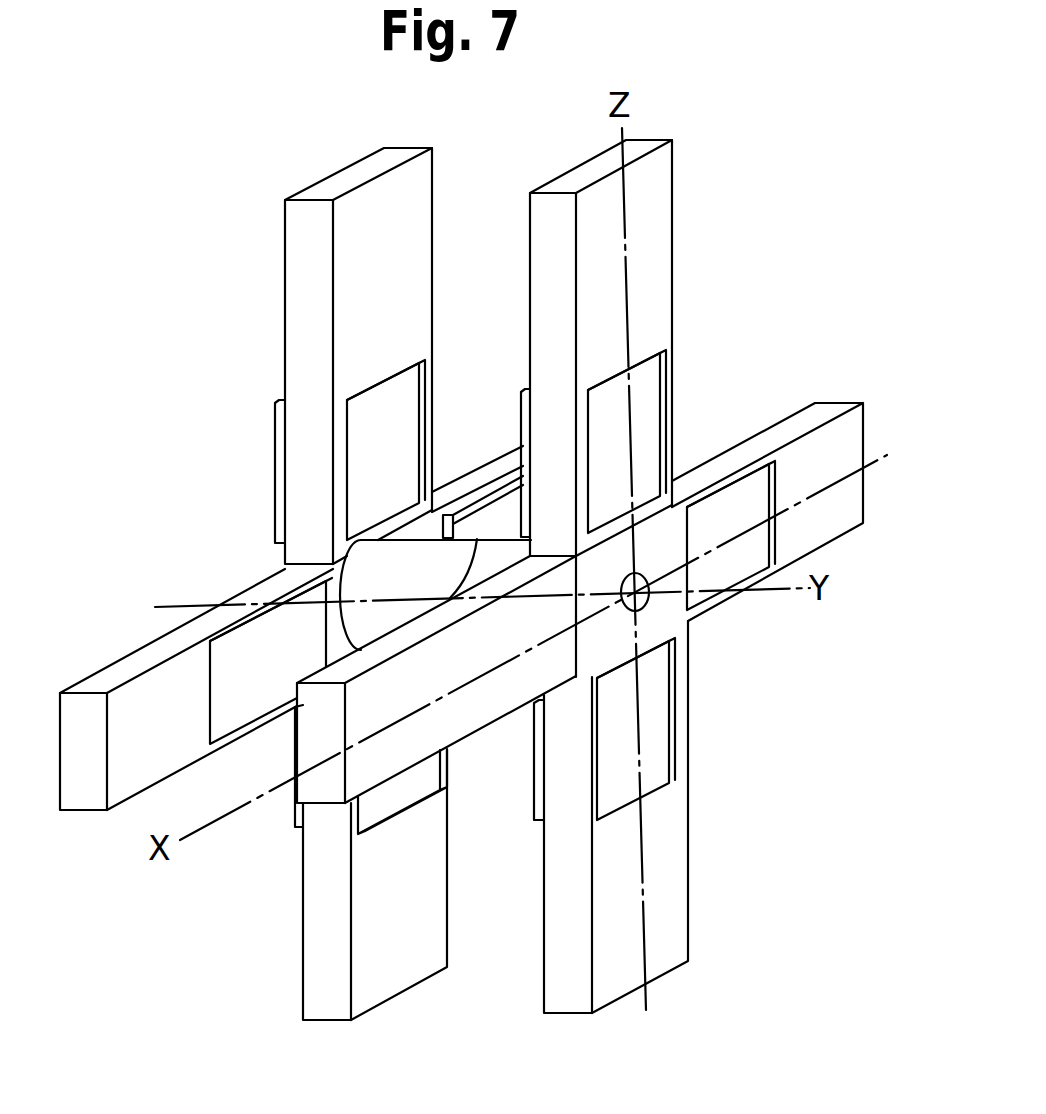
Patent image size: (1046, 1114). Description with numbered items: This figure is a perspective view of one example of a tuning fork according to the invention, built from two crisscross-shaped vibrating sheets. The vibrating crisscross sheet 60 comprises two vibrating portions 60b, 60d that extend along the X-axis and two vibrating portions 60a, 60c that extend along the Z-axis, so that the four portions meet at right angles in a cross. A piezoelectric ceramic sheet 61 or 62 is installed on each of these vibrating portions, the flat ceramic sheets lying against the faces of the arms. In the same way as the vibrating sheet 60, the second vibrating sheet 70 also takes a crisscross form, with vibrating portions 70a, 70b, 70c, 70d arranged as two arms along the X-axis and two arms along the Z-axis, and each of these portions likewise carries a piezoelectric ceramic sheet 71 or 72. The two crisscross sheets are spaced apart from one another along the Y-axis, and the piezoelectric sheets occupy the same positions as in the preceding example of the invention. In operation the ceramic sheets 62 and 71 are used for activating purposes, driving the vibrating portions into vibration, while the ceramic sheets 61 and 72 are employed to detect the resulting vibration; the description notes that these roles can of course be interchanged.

The vibrating crisscross sheet 60 is at (580, 576).
The vibrating portion 60a is at (688, 858).
The vibrating portion 60b is at (793, 460).
The vibrating portion 60c is at (653, 242).
The vibrating portion 60d is at (443, 738).
The piezoelectric ceramic sheet 61 is at (658, 744).
The piezoelectric ceramic sheet 62 is at (534, 812).
The vibrating sheet 70 is at (291, 608).
The vibrating portion 70a is at (421, 965).
The vibrating portion 70b is at (485, 472).
The vibrating portion 70c is at (410, 268).
The vibrating portion 70d is at (122, 667).
The piezoelectric ceramic sheet 71 is at (395, 800).
The piezoelectric ceramic sheet 72 is at (298, 812).